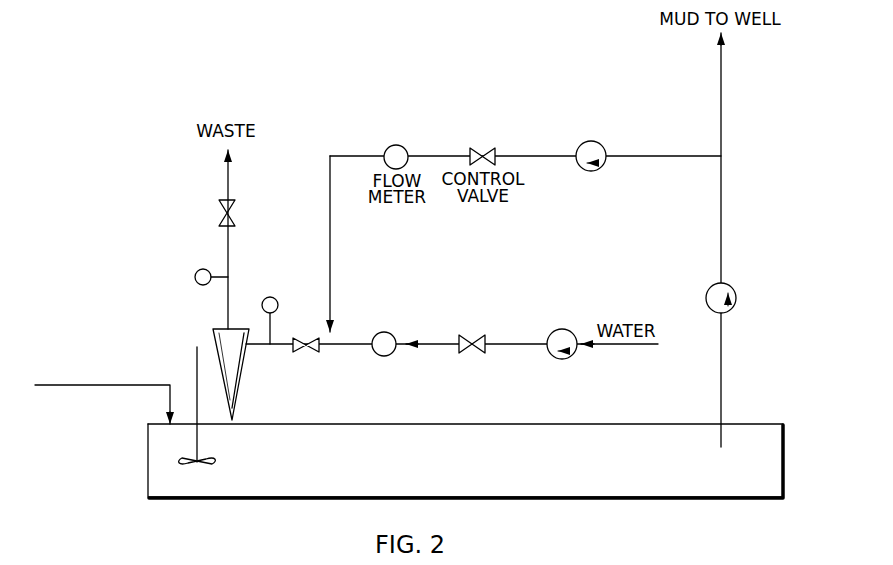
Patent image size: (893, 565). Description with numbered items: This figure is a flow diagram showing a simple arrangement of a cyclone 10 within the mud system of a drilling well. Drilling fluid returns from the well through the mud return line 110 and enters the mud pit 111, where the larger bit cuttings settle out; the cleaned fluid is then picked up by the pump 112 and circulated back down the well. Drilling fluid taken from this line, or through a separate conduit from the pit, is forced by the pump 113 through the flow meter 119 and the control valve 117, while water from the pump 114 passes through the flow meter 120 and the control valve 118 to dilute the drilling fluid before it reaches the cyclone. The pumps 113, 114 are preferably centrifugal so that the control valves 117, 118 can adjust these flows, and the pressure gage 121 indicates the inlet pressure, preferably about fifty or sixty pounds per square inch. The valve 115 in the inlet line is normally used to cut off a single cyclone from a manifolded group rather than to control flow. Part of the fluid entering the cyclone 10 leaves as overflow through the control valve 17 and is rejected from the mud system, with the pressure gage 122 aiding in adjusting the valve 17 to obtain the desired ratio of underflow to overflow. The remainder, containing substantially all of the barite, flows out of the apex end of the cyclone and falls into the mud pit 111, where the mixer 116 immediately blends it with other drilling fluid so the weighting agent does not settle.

The cyclone 10 is at (243, 370).
The control valve 17 is at (233, 216).
The mud return line 110 is at (110, 388).
The mud pit 111 is at (150, 457).
The pump 112 is at (738, 307).
The pump 113 is at (595, 140).
The pump 114 is at (572, 356).
The valve 115 is at (308, 350).
The mixer 116 is at (205, 458).
The control valve 117 is at (487, 150).
The control valve 118 is at (478, 336).
The flow meter 119 is at (388, 146).
The flow meter 120 is at (388, 332).
The pressure gage 121 is at (278, 294).
The pressure gage 122 is at (196, 270).